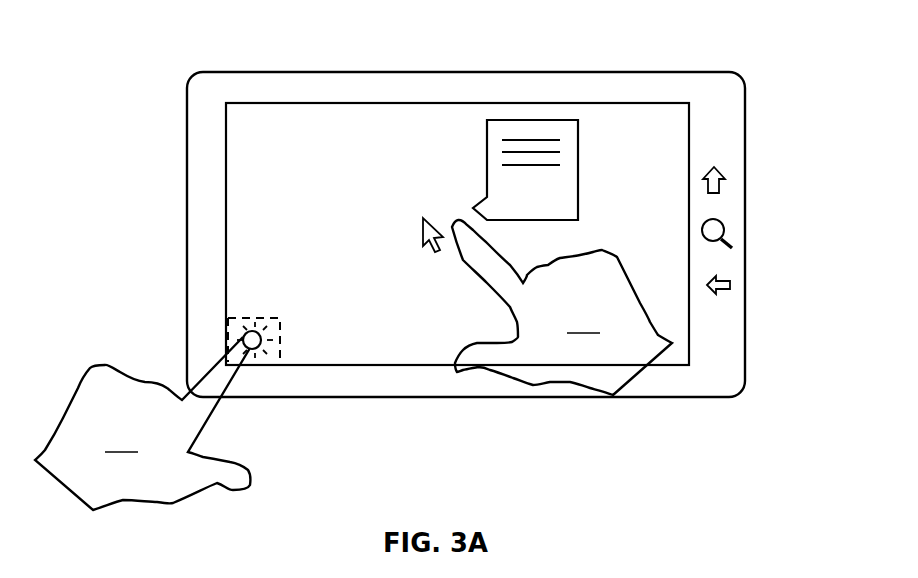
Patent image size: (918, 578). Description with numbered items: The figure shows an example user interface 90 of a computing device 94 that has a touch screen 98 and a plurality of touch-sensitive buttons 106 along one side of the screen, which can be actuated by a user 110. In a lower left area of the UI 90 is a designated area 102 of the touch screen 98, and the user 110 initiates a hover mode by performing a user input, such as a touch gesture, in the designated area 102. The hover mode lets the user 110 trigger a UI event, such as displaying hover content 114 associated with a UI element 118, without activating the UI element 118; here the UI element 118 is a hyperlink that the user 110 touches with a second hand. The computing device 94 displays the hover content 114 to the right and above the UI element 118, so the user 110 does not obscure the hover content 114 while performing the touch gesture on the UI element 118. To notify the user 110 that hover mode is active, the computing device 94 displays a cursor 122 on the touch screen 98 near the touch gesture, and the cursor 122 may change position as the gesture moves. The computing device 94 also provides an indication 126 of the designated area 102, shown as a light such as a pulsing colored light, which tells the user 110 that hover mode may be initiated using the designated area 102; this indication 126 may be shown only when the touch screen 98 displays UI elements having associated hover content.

The computing device 94 is at (797, 85).
The touch screen 98 is at (590, 102).
The user interface 90 is at (258, 195).
The touch-sensitive buttons 106 is at (733, 222).
The user 110 is at (353, 365).
The hover content 114 is at (478, 165).
The UI element 118 is at (360, 192).
The cursor 122 is at (415, 237).
The indication 126 is at (265, 318).
The designated area 102 is at (285, 348).